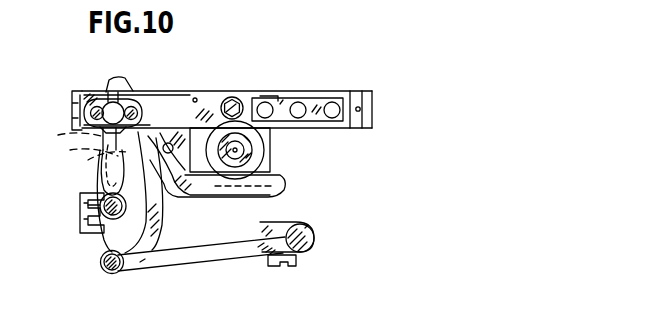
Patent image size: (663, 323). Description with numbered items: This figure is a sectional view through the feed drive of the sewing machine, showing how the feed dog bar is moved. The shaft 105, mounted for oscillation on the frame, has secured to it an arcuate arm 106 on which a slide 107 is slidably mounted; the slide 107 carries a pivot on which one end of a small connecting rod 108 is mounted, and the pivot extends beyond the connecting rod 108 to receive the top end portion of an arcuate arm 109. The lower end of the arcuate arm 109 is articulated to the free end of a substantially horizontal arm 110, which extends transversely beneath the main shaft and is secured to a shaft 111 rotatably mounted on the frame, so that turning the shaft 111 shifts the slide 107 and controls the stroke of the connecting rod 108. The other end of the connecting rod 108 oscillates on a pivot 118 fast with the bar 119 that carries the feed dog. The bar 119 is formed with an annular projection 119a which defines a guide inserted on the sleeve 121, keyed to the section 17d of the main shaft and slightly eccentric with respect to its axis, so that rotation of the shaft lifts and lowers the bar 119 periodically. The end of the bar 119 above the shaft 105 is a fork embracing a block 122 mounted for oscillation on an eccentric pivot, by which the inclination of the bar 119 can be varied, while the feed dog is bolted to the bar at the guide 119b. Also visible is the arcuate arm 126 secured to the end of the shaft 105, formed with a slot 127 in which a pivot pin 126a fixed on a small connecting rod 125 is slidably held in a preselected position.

The shaft 105 is at (102, 242).
The arcuate arm 106 is at (116, 86).
The slide 107 is at (112, 105).
The small connecting rod 108 is at (198, 95).
The arcuate arm 109 is at (162, 222).
The substantially horizontal arm 110 is at (185, 260).
The shaft 111 is at (308, 250).
The pivot 118 is at (238, 107).
The bar 119 is at (305, 93).
The annular projection 119a is at (284, 188).
The guide 119b is at (360, 94).
The sleeve 121 is at (262, 152).
The block 122 is at (70, 107).
The connecting rod 125 is at (196, 198).
The arm 126 is at (100, 178).
The pivot pin 126a is at (62, 133).
The slot 127 is at (92, 160).
The section of the main shaft 17d is at (278, 178).